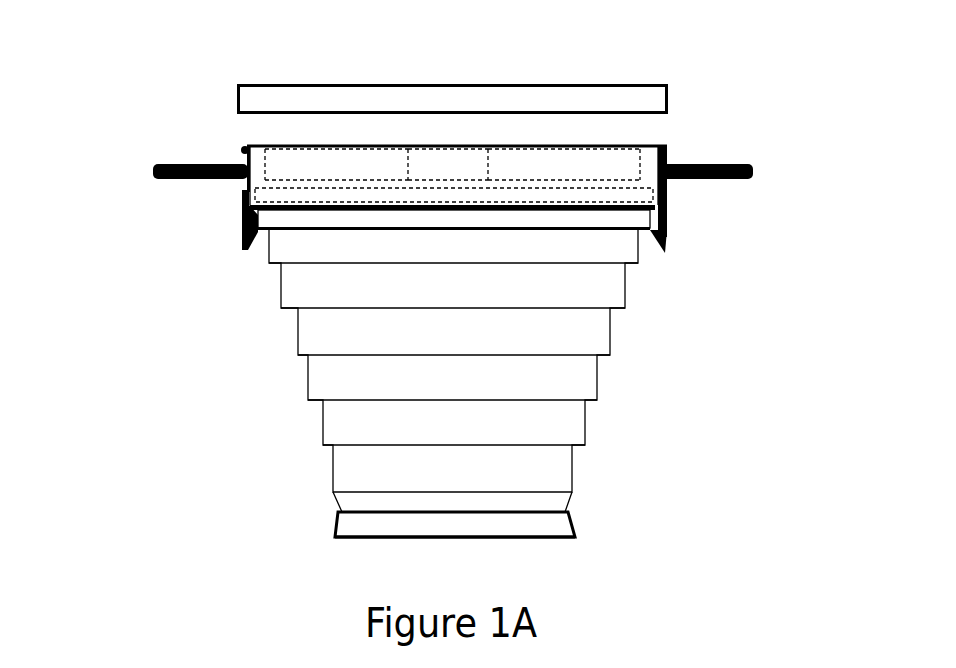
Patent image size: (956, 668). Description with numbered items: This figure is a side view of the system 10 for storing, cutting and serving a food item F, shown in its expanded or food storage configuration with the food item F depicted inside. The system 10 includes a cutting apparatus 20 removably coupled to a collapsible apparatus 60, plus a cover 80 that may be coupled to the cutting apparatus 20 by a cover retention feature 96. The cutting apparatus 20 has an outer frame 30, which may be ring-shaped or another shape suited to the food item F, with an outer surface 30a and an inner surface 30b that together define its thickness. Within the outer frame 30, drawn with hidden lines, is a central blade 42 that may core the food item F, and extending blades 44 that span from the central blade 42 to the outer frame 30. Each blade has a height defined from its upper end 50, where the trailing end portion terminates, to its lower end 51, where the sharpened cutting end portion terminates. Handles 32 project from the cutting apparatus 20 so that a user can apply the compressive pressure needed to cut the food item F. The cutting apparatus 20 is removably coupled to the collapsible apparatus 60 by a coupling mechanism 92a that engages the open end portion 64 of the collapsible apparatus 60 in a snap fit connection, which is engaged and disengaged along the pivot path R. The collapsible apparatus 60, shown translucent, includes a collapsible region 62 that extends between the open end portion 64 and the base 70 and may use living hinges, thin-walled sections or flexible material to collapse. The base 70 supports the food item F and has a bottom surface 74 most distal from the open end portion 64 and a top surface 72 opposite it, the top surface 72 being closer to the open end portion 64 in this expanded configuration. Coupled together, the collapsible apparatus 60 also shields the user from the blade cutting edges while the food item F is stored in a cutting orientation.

The system 10 is at (118, 128).
The cutting apparatus 20 is at (648, 136).
The outer frame 30 is at (380, 147).
The outer surface 30a is at (665, 158).
The inner surface 30b is at (637, 161).
The handles 32 is at (730, 165).
The central blade 42 is at (455, 165).
The extending blades 44 is at (312, 170).
The upper end 50 is at (508, 148).
The lower end 51 is at (547, 183).
The collapsible apparatus 60 is at (510, 374).
The collapsible region 62 is at (752, 238).
The open end portion 64 is at (533, 200).
The base 70 is at (338, 520).
The top surface 72 is at (558, 503).
The bottom surface 74 is at (543, 545).
The cover 80 is at (635, 83).
The coupling mechanism 92a is at (660, 218).
The cover retention feature 96 is at (246, 150).
The food item F is at (518, 382).
The pivot path R is at (227, 238).